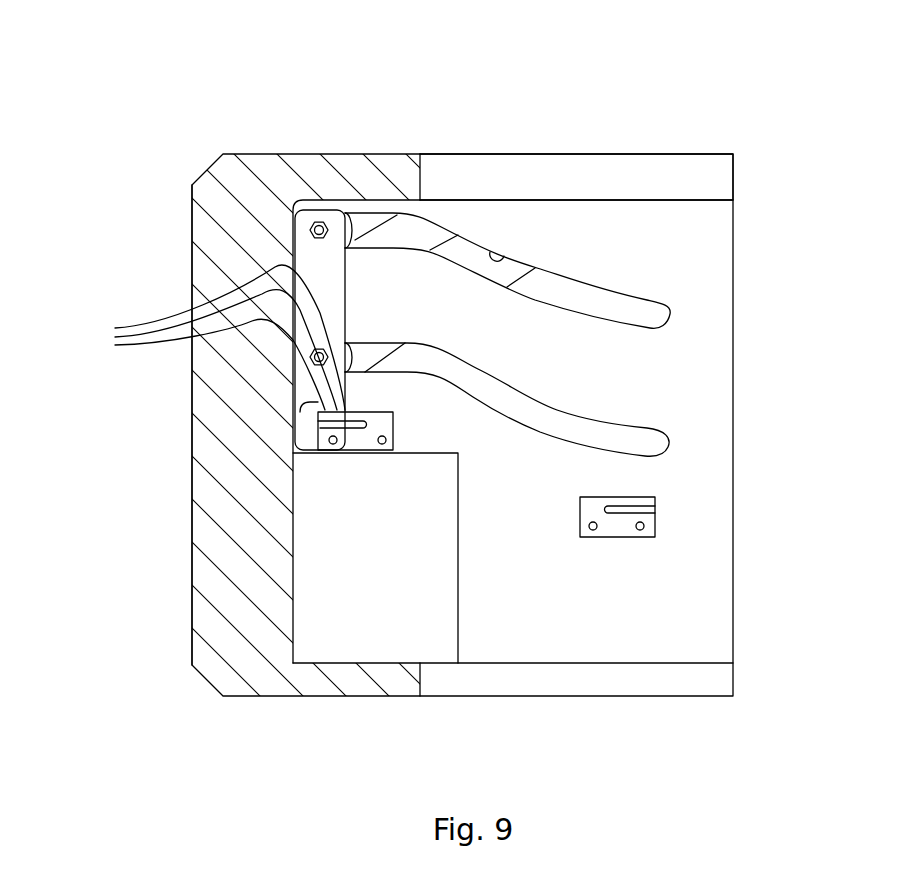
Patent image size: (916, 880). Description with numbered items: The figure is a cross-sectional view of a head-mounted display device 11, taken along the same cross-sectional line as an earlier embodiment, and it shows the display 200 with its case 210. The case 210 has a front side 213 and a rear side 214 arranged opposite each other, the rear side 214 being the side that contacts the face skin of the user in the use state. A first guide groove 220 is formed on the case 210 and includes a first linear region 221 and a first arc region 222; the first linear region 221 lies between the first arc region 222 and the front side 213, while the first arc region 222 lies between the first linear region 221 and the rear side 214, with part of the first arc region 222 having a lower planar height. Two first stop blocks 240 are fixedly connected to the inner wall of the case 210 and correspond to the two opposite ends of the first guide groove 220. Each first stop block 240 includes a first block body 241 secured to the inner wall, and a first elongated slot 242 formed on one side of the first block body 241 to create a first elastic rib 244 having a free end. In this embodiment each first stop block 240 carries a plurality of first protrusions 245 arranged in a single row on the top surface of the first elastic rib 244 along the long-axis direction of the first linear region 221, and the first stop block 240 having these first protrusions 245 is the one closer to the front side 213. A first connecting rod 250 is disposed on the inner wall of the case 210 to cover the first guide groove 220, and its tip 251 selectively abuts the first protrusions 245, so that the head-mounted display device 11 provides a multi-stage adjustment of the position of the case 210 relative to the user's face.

The head-mounted display device 11 is at (95, 96).
The display 200 is at (458, 440).
The case 210 is at (722, 680).
The front side 213 is at (192, 522).
The rear side 214 is at (735, 177).
The first guide groove 220 is at (590, 246).
The first linear region 221 is at (372, 222).
The first arc region 222 is at (553, 290).
The first stop block 240 is at (477, 607).
The first block body 241 is at (362, 440).
The first elongated slot 242 is at (347, 425).
The first elastic rib 244 is at (313, 452).
The first protrusions 245 is at (206, 337).
The first connecting rod 250 is at (307, 255).
The tip 251 is at (316, 410).